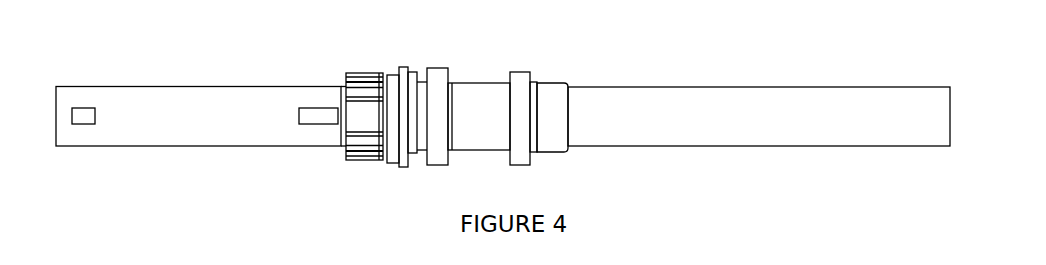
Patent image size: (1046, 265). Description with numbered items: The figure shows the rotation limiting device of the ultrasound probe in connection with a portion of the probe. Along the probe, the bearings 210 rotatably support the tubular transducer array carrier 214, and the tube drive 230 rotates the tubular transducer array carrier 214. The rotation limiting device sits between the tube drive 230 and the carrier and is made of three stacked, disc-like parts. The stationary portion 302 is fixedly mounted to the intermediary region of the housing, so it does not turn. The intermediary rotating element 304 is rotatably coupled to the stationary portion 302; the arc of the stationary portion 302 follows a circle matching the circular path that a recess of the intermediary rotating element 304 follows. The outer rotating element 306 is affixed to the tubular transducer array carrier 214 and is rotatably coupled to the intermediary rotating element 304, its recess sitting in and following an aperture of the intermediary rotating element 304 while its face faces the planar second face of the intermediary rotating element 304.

The bearings 210 is at (524, 156).
The tubular transducer array carrier 214 is at (477, 83).
The tube drive 230 is at (361, 159).
The stationary portion 302 is at (413, 72).
The intermediary rotating element 304 is at (403, 67).
The outer rotating element 306 is at (390, 74).